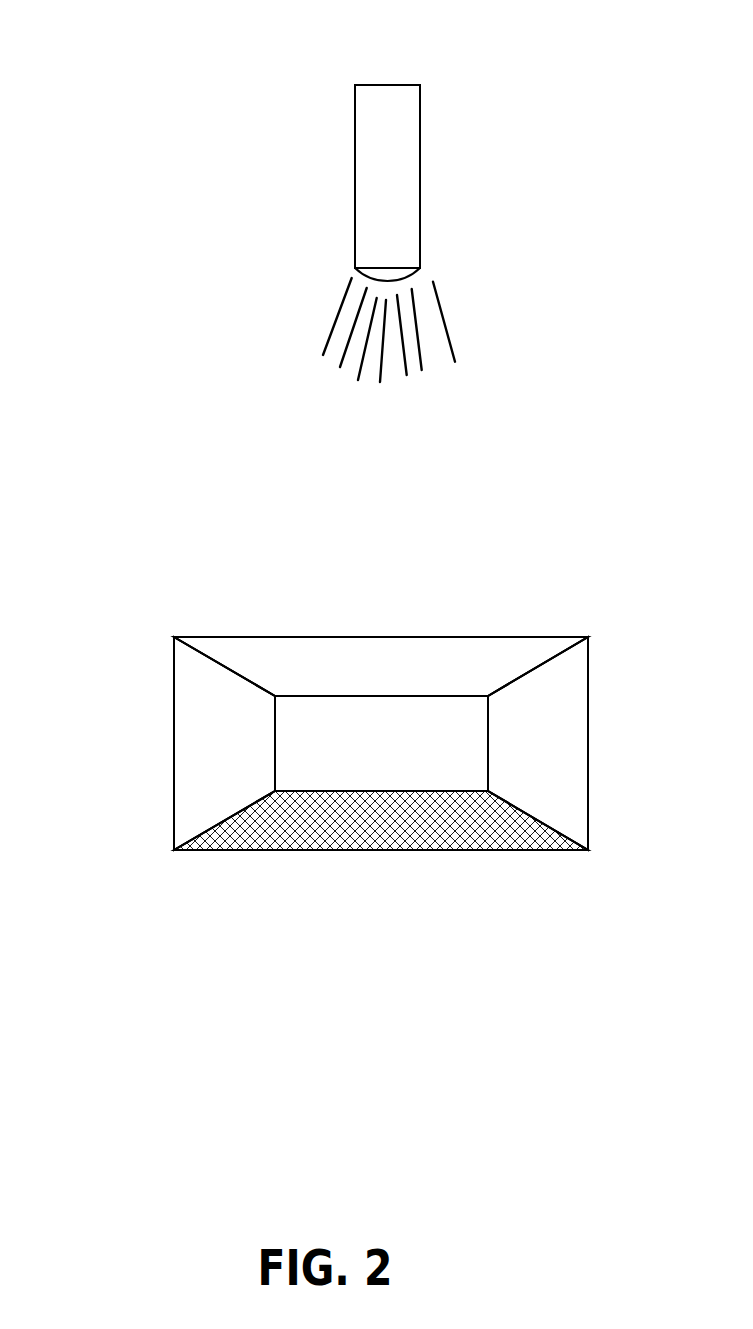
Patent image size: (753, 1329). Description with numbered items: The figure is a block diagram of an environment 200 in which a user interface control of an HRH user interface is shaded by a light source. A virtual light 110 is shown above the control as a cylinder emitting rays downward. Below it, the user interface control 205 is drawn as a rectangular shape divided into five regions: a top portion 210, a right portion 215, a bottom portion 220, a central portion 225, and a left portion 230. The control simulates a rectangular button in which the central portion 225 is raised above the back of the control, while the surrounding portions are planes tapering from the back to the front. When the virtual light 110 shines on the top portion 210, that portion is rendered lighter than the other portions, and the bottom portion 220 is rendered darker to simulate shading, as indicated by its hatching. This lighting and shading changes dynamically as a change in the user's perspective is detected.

The environment 200 is at (157, 62).
The virtual light 110 is at (406, 175).
The user interface control 205 is at (541, 626).
The portion 210 is at (364, 690).
The portion 215 is at (521, 762).
The portion 220 is at (362, 840).
The portion 225 is at (367, 770).
The portion 230 is at (203, 772).